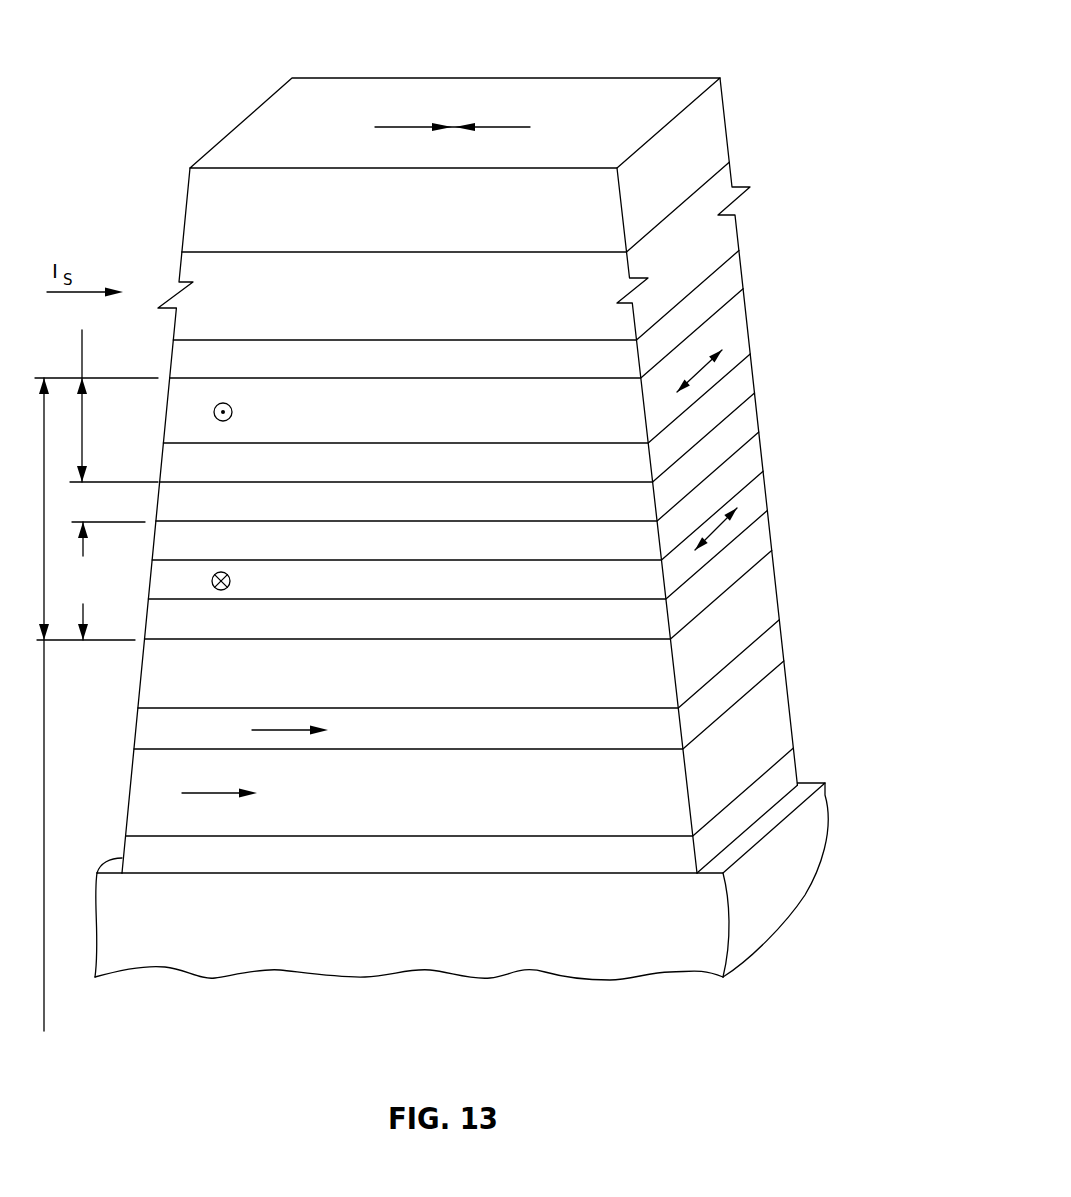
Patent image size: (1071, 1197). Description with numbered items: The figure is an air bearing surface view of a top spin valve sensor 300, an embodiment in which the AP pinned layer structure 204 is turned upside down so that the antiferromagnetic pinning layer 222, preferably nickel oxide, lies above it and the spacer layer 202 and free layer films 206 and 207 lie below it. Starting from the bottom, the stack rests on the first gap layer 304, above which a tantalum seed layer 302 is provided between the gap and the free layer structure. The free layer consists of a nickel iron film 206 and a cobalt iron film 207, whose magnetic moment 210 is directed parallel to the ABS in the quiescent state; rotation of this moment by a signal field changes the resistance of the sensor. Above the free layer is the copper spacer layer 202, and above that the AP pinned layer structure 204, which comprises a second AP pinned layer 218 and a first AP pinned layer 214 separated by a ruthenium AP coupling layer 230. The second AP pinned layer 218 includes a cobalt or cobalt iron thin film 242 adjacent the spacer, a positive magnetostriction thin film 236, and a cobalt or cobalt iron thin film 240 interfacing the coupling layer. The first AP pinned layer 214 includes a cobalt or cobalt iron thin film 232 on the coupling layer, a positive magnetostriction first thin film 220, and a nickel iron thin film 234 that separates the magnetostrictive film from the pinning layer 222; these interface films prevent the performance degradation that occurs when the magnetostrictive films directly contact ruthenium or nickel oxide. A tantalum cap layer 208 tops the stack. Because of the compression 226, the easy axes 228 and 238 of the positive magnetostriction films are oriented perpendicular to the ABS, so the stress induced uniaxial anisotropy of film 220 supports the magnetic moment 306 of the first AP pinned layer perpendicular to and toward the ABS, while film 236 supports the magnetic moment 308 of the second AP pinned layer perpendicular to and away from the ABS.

The spin valve sensor 300 is at (623, 58).
The cap layer 208 is at (716, 121).
The compression 226 is at (512, 127).
The antiferromagnetic pinning layer 222 is at (728, 232).
The nickel iron thin film 234 is at (734, 276).
The first thin film 220 is at (738, 325).
The magnetic moment of the first AP pinned layer 306 is at (222, 403).
The cobalt or cobalt iron thin film 232 is at (746, 370).
The easy axis 228 is at (702, 372).
The antiparallel coupling layer 230 is at (750, 417).
The cobalt or cobalt iron thin film 240 is at (752, 453).
The positive magnetostriction thin film 236 is at (757, 493).
The thin film 242 is at (762, 531).
The easy axis 238 is at (718, 530).
The magnetic moment of the second AP pinned layer 308 is at (221, 590).
The spacer layer 202 is at (770, 604).
The free layer film 207 is at (776, 638).
The magnetic moment of the free layer 210 is at (204, 793).
The free layer film 206 is at (780, 678).
The seed layer 302 is at (790, 767).
The first gap layer 304 is at (767, 927).
The first AP pinned layer 214 is at (82, 330).
The second AP pinned layer 218 is at (104, 581).
The AP pinned layer structure 204 is at (44, 1031).